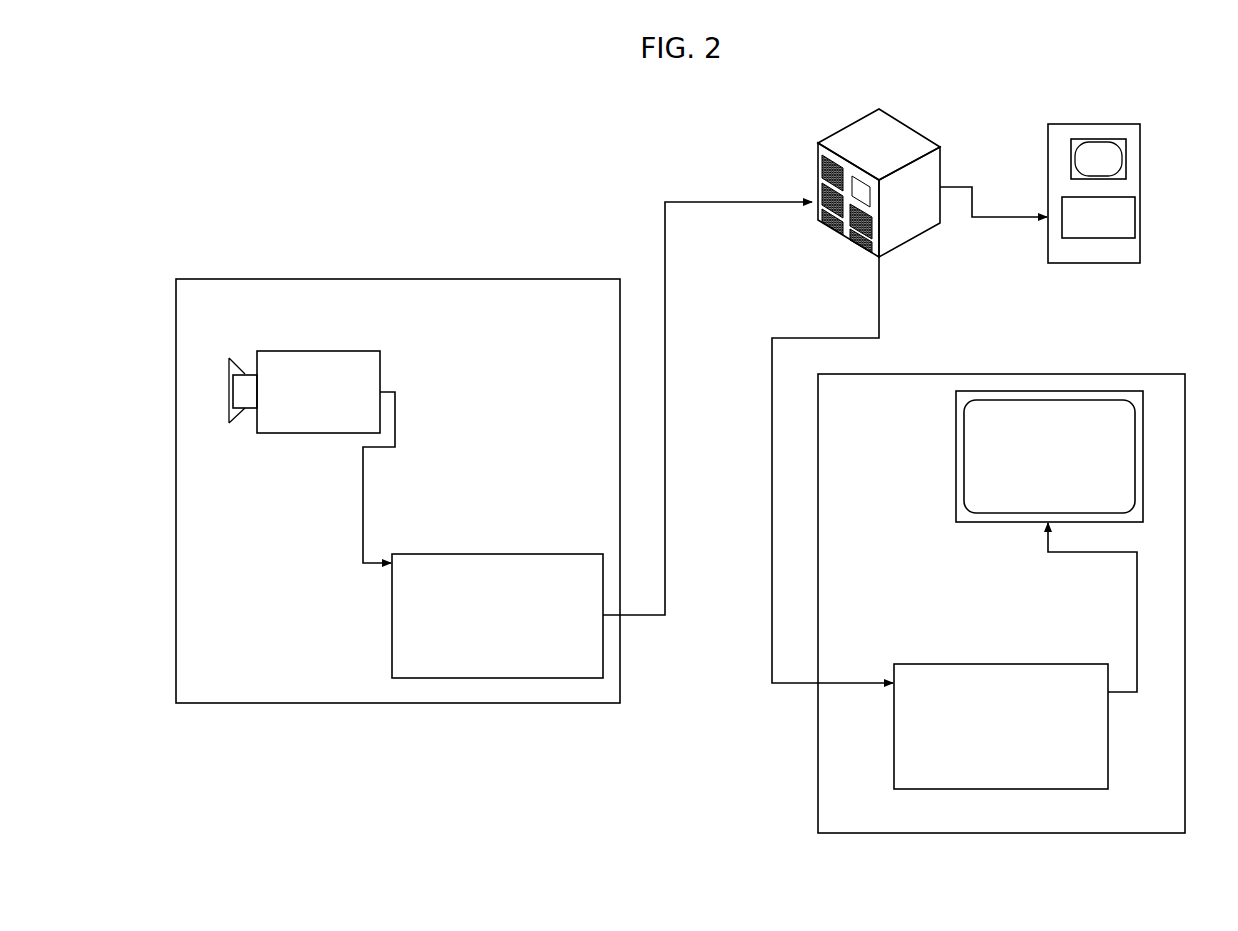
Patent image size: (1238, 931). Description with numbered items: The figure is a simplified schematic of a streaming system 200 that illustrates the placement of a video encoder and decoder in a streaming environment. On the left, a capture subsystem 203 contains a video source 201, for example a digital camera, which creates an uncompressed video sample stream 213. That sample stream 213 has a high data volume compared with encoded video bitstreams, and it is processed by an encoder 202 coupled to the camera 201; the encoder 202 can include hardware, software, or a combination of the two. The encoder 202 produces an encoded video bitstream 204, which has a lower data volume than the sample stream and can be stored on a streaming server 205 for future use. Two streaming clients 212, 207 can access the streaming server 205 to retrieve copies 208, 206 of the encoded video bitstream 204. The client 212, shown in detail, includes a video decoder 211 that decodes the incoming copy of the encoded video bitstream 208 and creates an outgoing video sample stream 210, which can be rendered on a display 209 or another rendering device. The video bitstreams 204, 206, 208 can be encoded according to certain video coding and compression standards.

The image processing system 200 is at (210, 145).
The video source 201 is at (315, 350).
The encoder 202 is at (508, 553).
The capture subsystem 203 is at (384, 705).
The encoded video bitstream 204 is at (664, 230).
The streaming server 205 is at (816, 171).
The copy of the encoded video bitstream 206 is at (1003, 218).
The streaming client 207 is at (1141, 152).
The copy of the encoded video bitstream 208 is at (771, 520).
The display 209 is at (955, 445).
The outgoing video sample stream 210 is at (1136, 623).
The video decoder 211 is at (893, 756).
The streaming client 212 is at (817, 771).
The uncompressed video sample stream 213 is at (360, 518).